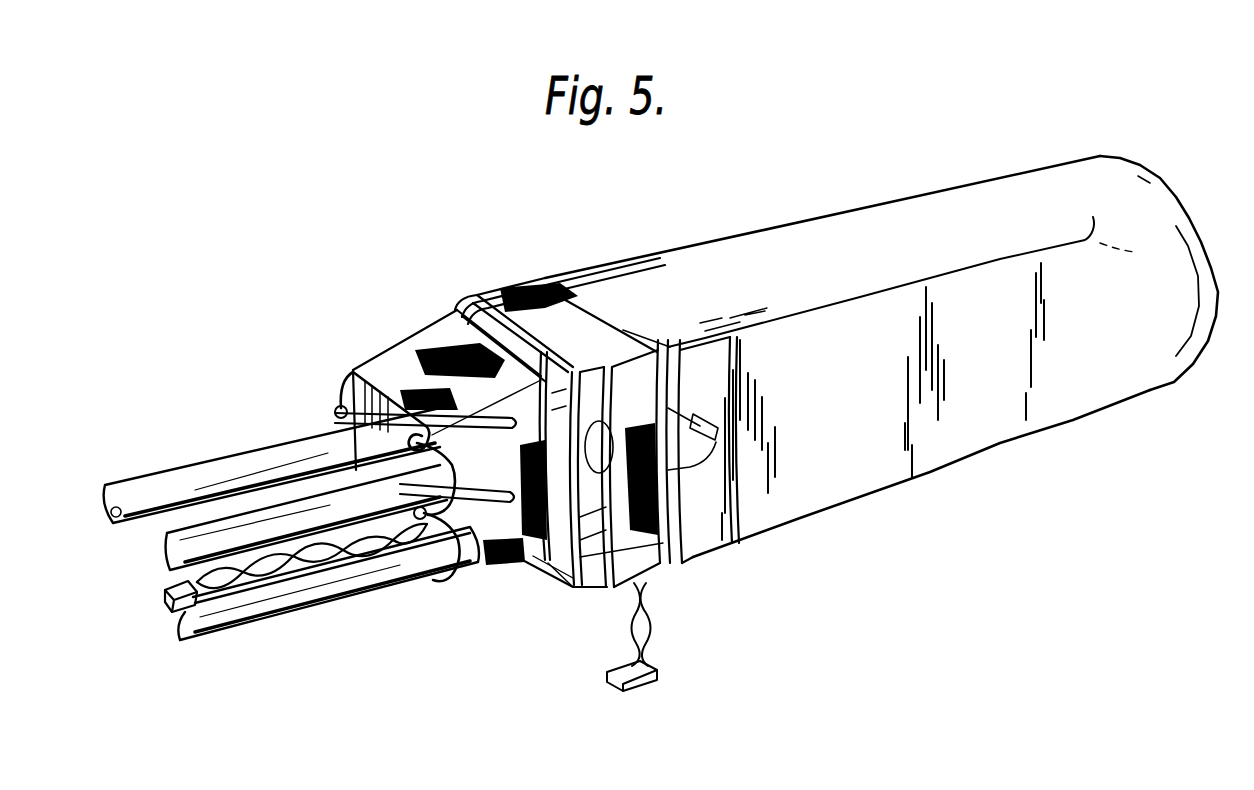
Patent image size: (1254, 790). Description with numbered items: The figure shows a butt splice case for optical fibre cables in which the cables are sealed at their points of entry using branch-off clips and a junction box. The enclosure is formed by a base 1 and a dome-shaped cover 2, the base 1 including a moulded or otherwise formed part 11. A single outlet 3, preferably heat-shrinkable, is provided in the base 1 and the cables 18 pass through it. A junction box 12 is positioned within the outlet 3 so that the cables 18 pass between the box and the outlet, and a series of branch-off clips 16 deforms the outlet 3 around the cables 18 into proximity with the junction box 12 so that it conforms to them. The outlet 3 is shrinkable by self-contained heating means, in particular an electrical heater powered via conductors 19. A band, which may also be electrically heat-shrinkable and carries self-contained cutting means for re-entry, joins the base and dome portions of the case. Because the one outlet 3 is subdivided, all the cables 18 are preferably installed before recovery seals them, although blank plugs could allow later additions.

The base plate 1 is at (511, 283).
The dome-shaped cover 2 is at (948, 186).
The outlet 3 is at (343, 437).
The moulded or otherwise formed part 11 is at (440, 348).
The junction box 12 is at (400, 540).
The branch-off clips 16 is at (341, 406).
The cables 18 is at (196, 460).
The conductors 19 is at (165, 601).